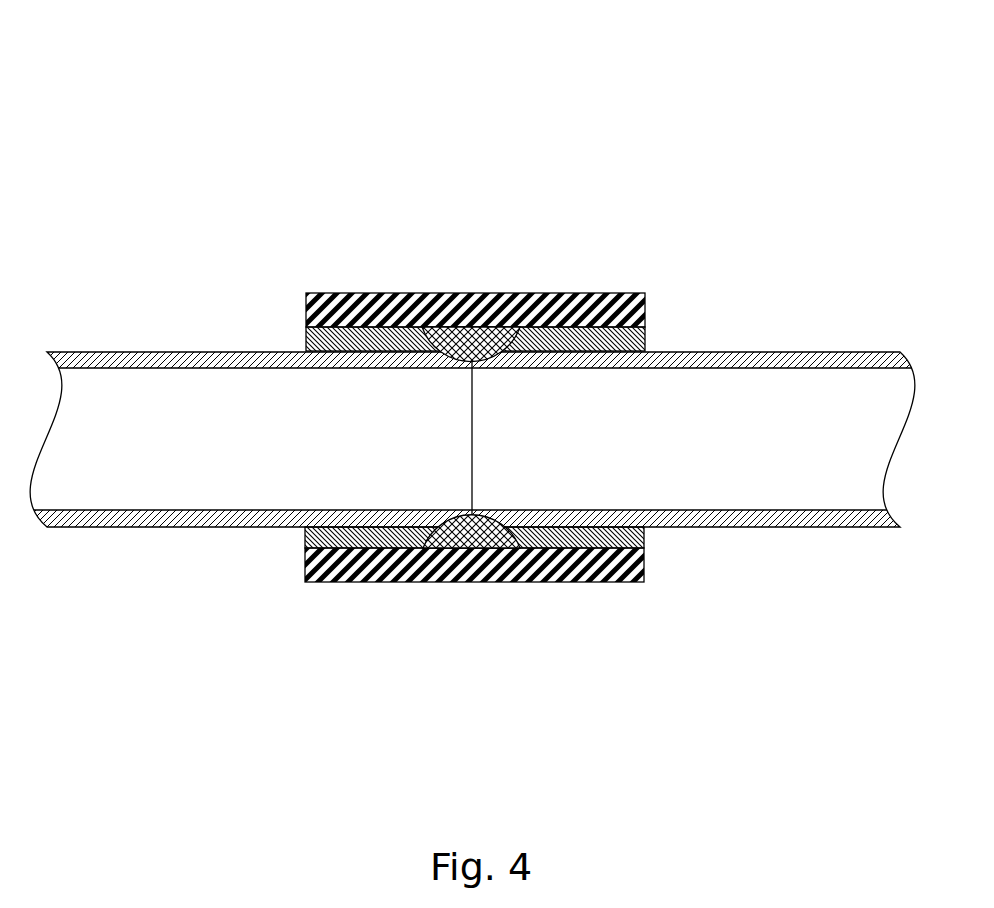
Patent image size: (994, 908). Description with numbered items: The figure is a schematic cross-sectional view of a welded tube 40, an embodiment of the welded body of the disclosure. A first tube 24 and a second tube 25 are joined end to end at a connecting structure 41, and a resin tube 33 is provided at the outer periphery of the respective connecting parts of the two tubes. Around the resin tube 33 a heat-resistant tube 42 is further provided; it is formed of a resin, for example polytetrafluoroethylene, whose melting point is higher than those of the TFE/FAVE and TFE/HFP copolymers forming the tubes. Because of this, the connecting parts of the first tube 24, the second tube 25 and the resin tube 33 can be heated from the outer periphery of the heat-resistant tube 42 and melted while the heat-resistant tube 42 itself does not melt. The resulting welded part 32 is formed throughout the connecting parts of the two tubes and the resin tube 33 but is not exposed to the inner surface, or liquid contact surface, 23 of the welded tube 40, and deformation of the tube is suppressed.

The inner surface (liquid contact surface) 23 is at (197, 352).
The first tube 24 is at (114, 352).
The second tube 25 is at (767, 352).
The welded part 32 is at (475, 327).
The resin tube 33 is at (375, 325).
The welded tube 40 is at (813, 157).
The connecting structure 41 is at (467, 255).
The heat-resistant tube 42 is at (610, 310).